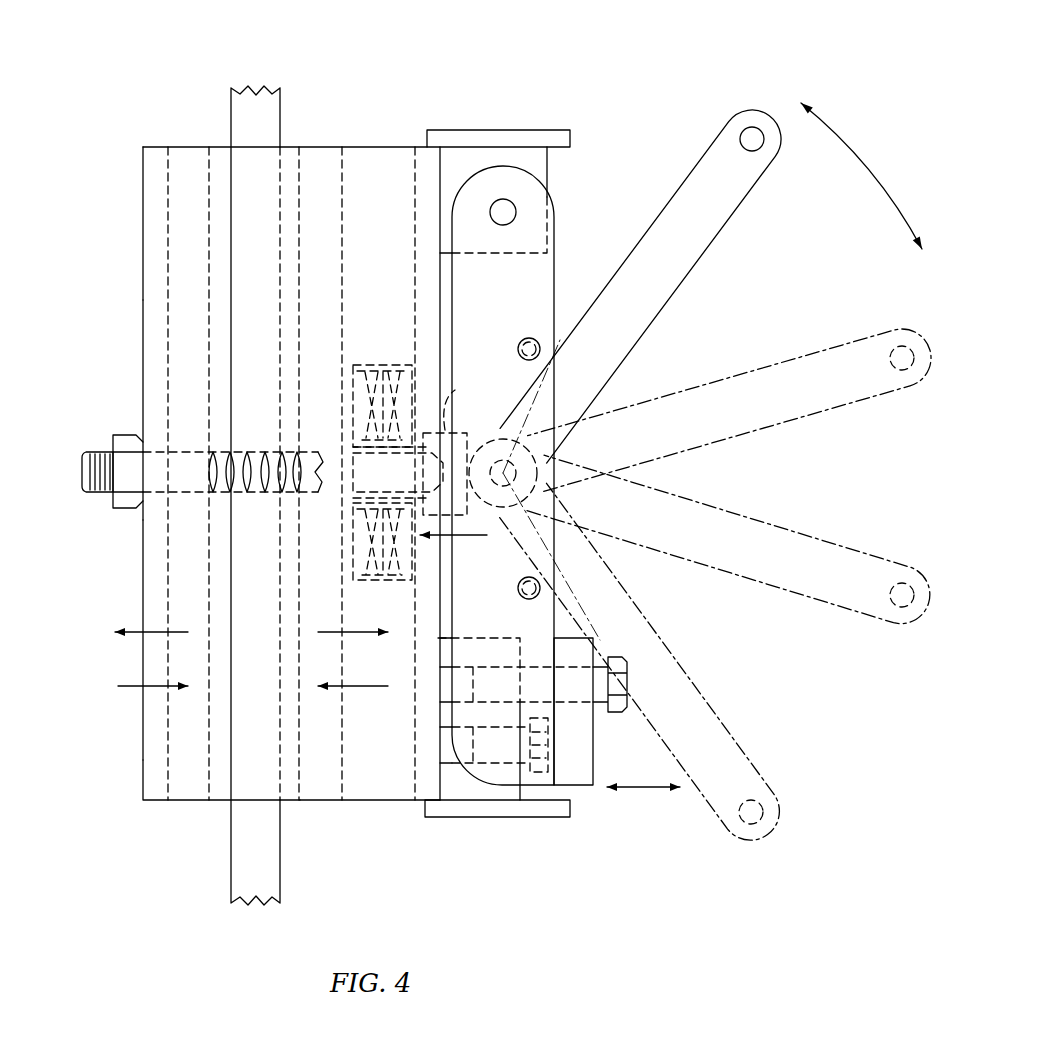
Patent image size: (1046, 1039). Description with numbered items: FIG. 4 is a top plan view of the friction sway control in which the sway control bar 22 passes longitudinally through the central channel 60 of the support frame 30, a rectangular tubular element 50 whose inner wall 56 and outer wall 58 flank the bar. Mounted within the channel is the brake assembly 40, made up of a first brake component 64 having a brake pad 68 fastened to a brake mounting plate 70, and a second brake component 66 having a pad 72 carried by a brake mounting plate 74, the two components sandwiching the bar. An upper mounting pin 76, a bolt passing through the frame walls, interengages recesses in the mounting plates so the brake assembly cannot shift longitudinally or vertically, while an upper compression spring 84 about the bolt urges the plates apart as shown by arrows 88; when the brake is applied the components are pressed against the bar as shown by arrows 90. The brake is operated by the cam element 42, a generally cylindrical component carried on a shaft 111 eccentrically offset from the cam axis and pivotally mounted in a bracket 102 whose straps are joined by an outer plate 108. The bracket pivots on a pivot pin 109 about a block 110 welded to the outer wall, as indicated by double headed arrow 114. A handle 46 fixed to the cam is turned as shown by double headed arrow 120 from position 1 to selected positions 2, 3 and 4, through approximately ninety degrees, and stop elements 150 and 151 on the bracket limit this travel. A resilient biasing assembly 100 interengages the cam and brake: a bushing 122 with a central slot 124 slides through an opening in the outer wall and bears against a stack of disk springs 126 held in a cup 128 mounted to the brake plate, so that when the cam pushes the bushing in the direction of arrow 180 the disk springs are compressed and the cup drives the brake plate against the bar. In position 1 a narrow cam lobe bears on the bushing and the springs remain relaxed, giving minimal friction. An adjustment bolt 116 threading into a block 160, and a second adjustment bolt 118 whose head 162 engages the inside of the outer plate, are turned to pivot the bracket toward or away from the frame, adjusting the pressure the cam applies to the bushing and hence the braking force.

The handle position 1 is at (722, 218).
The handle position 2 is at (790, 420).
The handle position 3 is at (798, 596).
The handle position 4 is at (741, 750).
The sway control bar 22 is at (281, 98).
The support frame 30 is at (143, 775).
The brake assembly 40 is at (209, 145).
The cam element 42 is at (505, 440).
The handle 46 is at (682, 295).
The tubular element 50 is at (143, 725).
The inner wall 56 is at (155, 322).
The outer wall 58 is at (427, 162).
The central channel 60 is at (208, 802).
The first brake component 64 is at (343, 167).
The second brake component 66 is at (152, 177).
The brake pad 68 is at (287, 801).
The brake mounting plate 70 is at (325, 797).
The pad 72 is at (217, 262).
The brake mounting plate 74 is at (173, 222).
The upper mounting pin 76 is at (97, 495).
The upper compression spring 84 is at (240, 445).
The arrows 88 is at (345, 632).
The arrows 90 is at (348, 686).
The resilient biasing assembly 100 is at (412, 575).
The bracket 102 is at (557, 235).
The outer plate 108 is at (593, 752).
The pivot pin 109 is at (504, 198).
The block 110 is at (538, 165).
The shaft 111 is at (530, 440).
The double headed arrow 114 is at (640, 787).
The adjustment bolt 116 is at (627, 685).
The second adjustment bolt 118 is at (548, 728).
The double headed arrow 120 is at (865, 180).
The bushing 122 is at (455, 390).
The central slot 124 is at (422, 430).
The disk springs 126 is at (375, 360).
The cup 128 is at (355, 350).
The stop element 150 is at (532, 340).
The stop element 151 is at (540, 593).
The block 160 is at (488, 648).
The head 162 is at (540, 775).
The arrow 180 is at (487, 535).